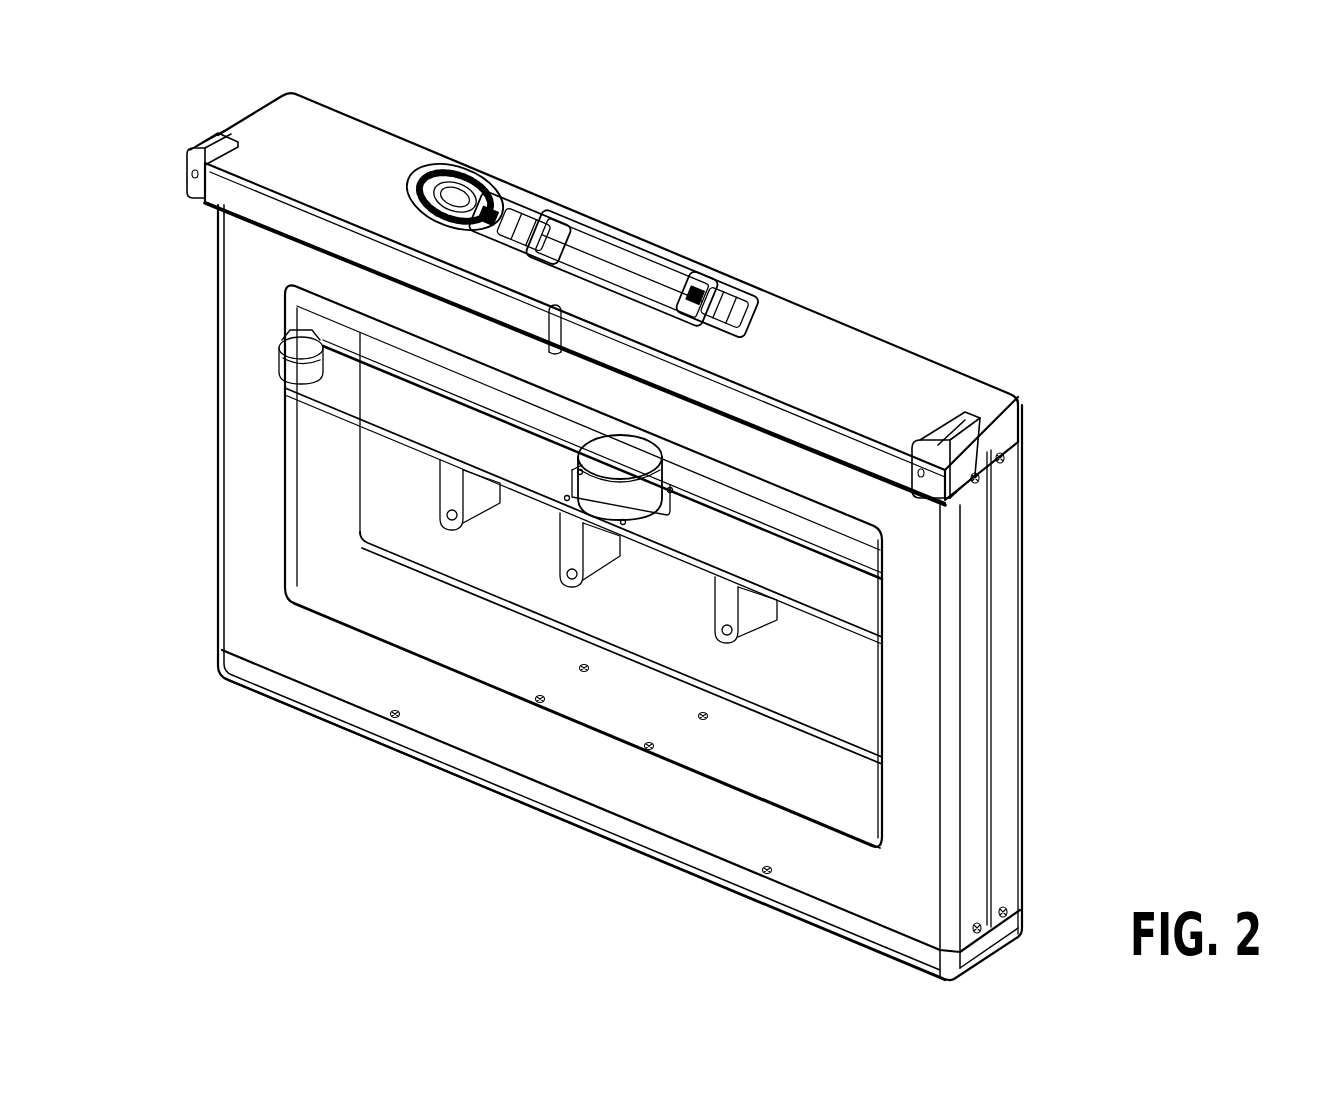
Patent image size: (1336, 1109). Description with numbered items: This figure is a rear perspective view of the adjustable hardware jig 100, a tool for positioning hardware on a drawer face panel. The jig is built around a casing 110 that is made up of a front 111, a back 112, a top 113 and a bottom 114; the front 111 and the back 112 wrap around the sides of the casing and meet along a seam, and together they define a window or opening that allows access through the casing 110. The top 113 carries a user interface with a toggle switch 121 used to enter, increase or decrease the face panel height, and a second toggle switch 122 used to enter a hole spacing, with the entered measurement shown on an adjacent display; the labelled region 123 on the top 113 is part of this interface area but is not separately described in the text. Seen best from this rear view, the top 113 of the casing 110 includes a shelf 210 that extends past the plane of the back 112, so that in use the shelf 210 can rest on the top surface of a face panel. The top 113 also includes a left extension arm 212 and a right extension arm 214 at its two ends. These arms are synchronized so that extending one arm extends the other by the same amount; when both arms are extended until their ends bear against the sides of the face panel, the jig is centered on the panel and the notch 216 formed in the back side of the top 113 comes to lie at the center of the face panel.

The adjustable hardware jig 100 is at (978, 88).
The casing 110 is at (570, 832).
The front 111 is at (1003, 490).
The back 112 is at (445, 718).
The top 113 is at (900, 355).
The bottom 114 is at (676, 908).
The toggle switch 121 is at (545, 215).
The toggle switch 122 is at (745, 297).
The display label 123 is at (575, 250).
The shelf 210 is at (317, 213).
The left extension arm 212 is at (192, 190).
The right extension arm 214 is at (930, 435).
The notch 216 is at (565, 307).